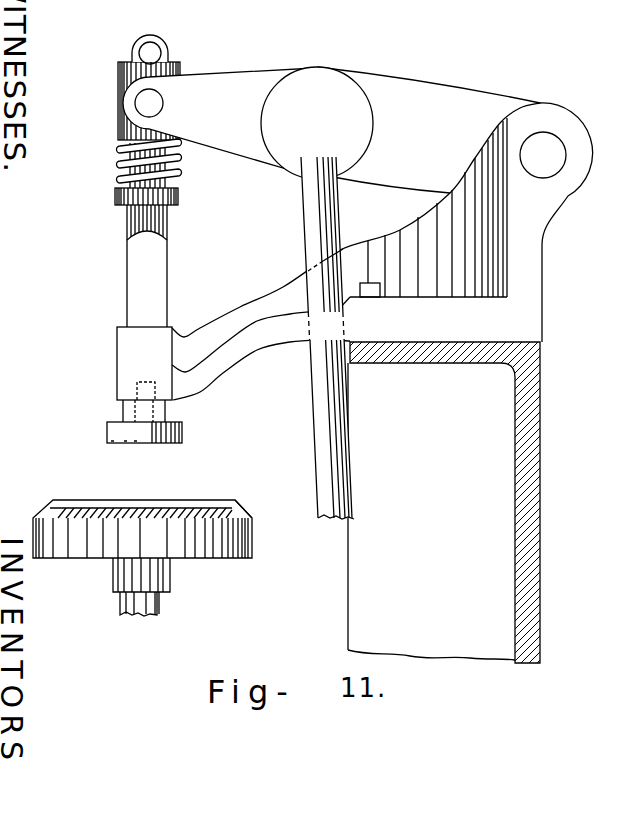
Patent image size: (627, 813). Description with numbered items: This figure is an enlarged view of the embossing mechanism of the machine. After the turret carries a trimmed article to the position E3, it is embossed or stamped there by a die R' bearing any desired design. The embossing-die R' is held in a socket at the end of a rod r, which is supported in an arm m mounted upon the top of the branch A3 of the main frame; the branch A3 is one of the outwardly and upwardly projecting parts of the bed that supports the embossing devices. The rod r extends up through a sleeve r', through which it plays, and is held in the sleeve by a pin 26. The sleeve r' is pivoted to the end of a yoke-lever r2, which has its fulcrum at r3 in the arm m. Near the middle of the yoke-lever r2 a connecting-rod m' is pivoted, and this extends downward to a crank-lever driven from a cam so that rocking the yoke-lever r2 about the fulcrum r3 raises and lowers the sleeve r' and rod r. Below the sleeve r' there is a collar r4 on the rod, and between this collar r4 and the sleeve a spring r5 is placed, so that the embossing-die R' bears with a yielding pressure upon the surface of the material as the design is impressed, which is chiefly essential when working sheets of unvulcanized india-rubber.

The pin 26 is at (156, 50).
The sleeve r' is at (167, 95).
The yoke-lever r2 is at (331, 130).
The fulcrum r3 is at (543, 155).
The collar r4 is at (179, 201).
The spring r5 is at (181, 176).
The rod r is at (144, 302).
The connecting-rod m' is at (309, 338).
The arm m is at (382, 251).
The embossing-die R' is at (163, 421).
The embossing position E3 is at (253, 542).
The frame branch A3 is at (458, 540).